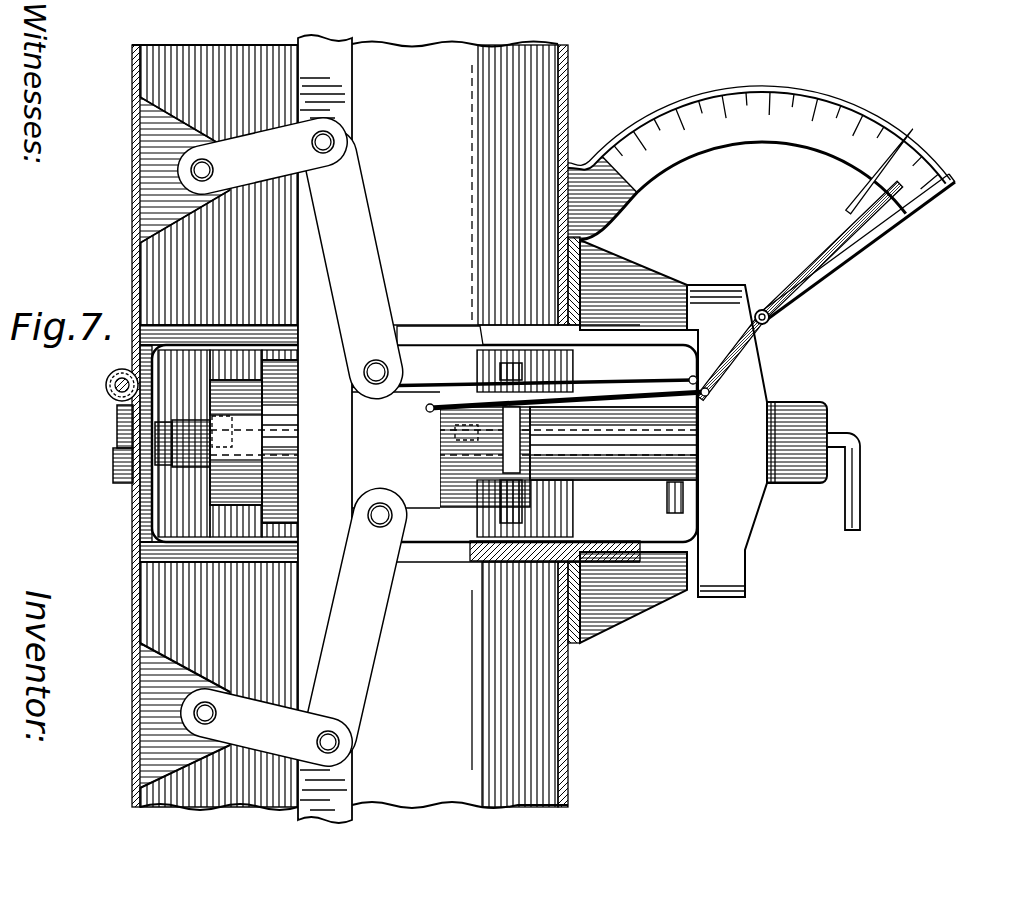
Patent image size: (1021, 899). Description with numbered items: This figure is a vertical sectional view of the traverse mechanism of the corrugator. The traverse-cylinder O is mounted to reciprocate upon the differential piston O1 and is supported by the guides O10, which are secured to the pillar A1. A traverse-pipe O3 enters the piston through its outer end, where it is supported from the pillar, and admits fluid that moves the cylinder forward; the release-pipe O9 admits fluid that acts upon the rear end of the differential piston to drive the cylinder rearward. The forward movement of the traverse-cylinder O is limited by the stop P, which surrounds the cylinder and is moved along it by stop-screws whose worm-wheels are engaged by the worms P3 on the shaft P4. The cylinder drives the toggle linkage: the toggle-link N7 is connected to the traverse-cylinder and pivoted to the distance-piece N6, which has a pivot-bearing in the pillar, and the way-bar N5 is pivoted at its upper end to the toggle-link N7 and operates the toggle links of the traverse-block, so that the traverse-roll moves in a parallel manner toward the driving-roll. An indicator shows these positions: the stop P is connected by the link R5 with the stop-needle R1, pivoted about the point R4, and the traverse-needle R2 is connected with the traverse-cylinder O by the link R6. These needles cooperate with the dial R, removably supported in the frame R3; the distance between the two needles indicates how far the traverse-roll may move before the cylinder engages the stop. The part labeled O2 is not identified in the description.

The pillar A1 is at (568, 85).
The way-bar N5 is at (327, 70).
The distance-piece N6 is at (265, 442).
The toggle-link N7 is at (363, 238).
The stop P is at (285, 377).
The worm P3 is at (108, 392).
The shaft P4 is at (117, 422).
The traverse-cylinder O is at (390, 450).
The differential piston O1 is at (643, 450).
The bracket O2 is at (732, 503).
The traverse-pipe O3 is at (853, 505).
The release-pipe O9 is at (672, 493).
The guides O10 is at (437, 333).
The dial R is at (780, 135).
The stop-needle R1 is at (956, 178).
The traverse-needle R2 is at (892, 145).
The frame R3 is at (792, 93).
The pivot point R4 is at (770, 319).
The link R5 is at (584, 388).
The link R6 is at (637, 398).